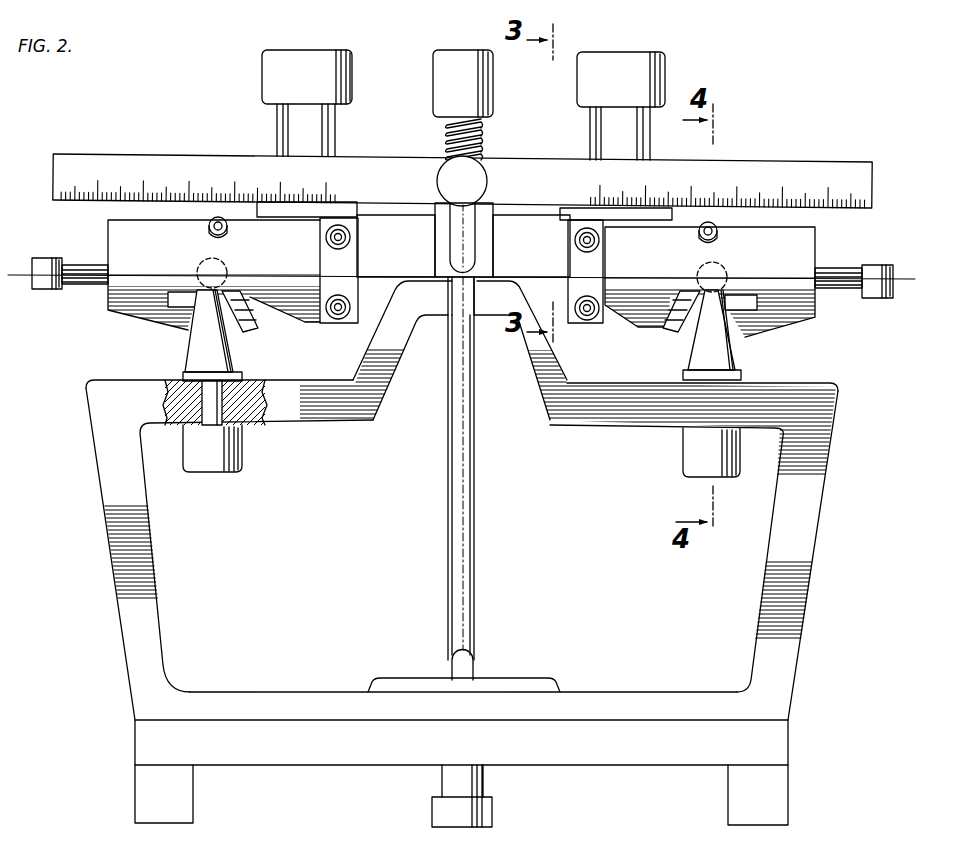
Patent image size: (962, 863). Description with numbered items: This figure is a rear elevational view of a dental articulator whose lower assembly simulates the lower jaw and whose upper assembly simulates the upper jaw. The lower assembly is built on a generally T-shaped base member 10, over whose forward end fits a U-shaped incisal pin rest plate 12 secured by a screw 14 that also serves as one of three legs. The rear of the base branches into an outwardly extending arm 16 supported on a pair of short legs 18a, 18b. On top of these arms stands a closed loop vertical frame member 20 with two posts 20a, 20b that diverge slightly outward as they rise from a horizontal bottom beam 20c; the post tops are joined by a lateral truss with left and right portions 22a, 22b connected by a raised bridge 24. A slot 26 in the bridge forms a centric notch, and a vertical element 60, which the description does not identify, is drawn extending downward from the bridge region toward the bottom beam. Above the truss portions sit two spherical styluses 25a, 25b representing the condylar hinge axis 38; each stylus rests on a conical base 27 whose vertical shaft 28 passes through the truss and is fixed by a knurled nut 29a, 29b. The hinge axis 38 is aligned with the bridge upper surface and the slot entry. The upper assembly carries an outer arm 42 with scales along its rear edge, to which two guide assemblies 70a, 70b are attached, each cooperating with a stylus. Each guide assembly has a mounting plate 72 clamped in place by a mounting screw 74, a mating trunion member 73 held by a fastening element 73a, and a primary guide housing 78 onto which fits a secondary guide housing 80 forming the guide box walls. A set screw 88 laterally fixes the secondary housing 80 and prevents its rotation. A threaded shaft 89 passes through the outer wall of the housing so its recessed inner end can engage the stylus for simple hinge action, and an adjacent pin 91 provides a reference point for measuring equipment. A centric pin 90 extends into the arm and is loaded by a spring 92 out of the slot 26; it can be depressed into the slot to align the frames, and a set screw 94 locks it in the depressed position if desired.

The base member 10 is at (240, 768).
The incisal pin rest plate 12 is at (520, 678).
The screw 14 is at (493, 812).
The outwardly extending arm 16 is at (324, 766).
The short leg 18a is at (134, 796).
The short leg 18b is at (728, 798).
The vertical frame member 20 is at (462, 550).
The vertical post 20a is at (164, 618).
The vertical post 20b is at (756, 614).
The horizontal bottom beam 20c is at (583, 694).
The lateral truss portion 22a is at (330, 420).
The lateral truss portion 22b is at (632, 445).
The bridge 24 is at (568, 379).
The spherical stylus 25a is at (196, 272).
The spherical stylus 25b is at (728, 275).
The slot 26 is at (452, 292).
The conical base 27 is at (186, 355).
The vertical shaft 28 is at (262, 408).
The knurled nut 29a is at (227, 470).
The knurled nut 29b is at (683, 463).
The hinge axis 38 is at (22, 282).
The outer arm 42 is at (262, 156).
The spindle 60 is at (476, 528).
The guide assembly 70a is at (106, 236).
The guide assembly 70b is at (660, 160).
The mounting plate 72 is at (570, 213).
The mating trunion member 73 is at (575, 258).
The fastening element 73a is at (576, 240).
The mounting screw 74 is at (578, 93).
The primary guide housing 78 is at (140, 226).
The secondary guide housing 80 is at (664, 334).
The set screw 88 is at (716, 228).
The shaft 89 is at (48, 257).
The centric pin 90 is at (455, 233).
The pin 91 is at (88, 266).
The spring 92 is at (446, 138).
The set screw 94 is at (482, 172).